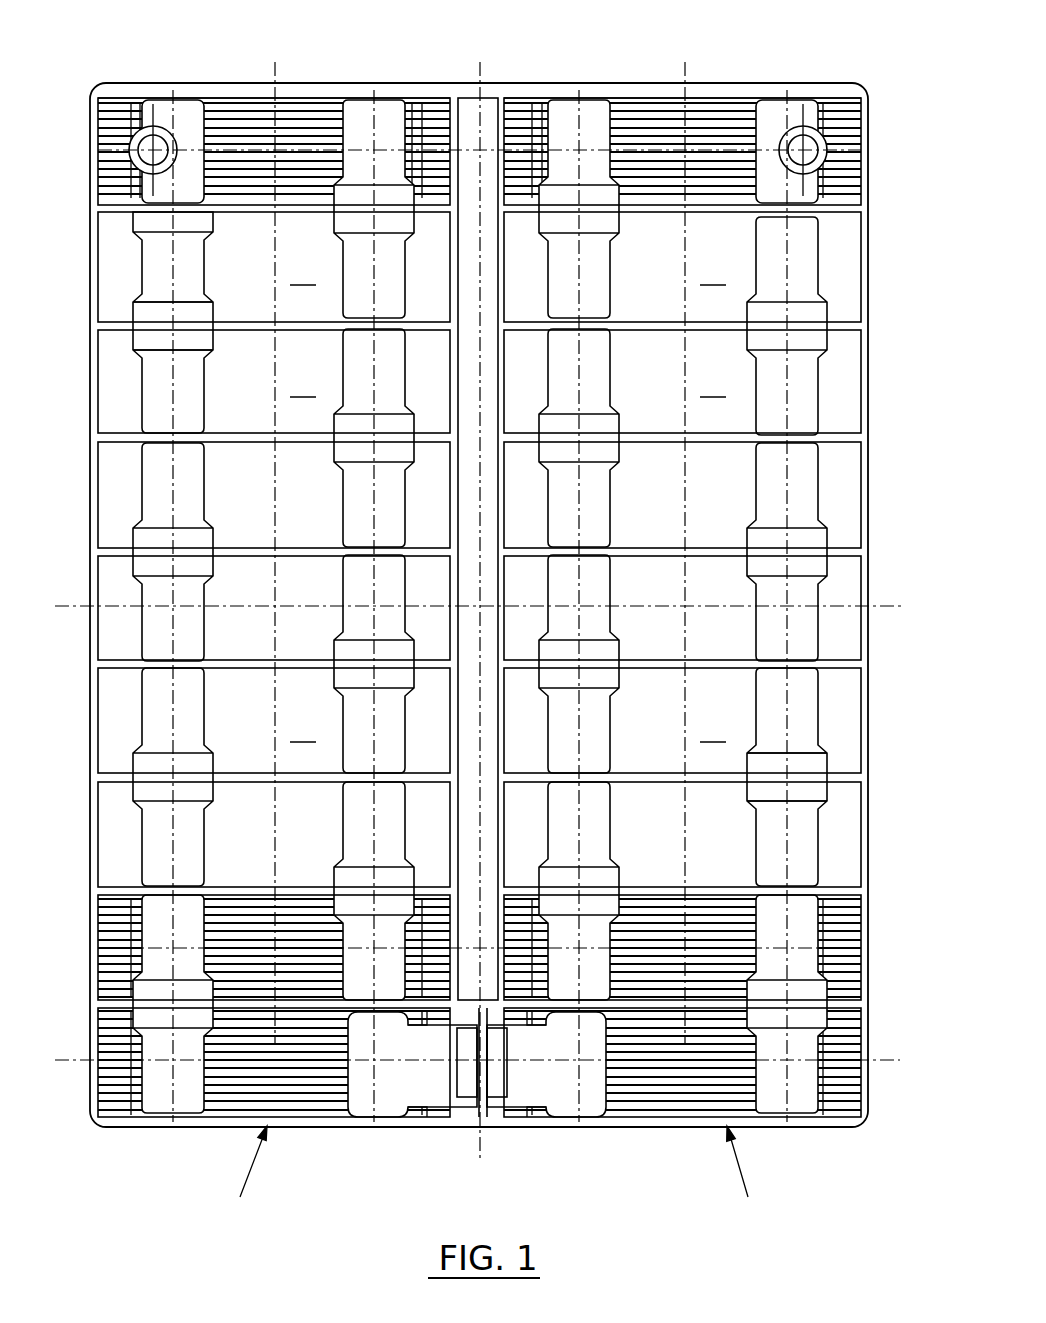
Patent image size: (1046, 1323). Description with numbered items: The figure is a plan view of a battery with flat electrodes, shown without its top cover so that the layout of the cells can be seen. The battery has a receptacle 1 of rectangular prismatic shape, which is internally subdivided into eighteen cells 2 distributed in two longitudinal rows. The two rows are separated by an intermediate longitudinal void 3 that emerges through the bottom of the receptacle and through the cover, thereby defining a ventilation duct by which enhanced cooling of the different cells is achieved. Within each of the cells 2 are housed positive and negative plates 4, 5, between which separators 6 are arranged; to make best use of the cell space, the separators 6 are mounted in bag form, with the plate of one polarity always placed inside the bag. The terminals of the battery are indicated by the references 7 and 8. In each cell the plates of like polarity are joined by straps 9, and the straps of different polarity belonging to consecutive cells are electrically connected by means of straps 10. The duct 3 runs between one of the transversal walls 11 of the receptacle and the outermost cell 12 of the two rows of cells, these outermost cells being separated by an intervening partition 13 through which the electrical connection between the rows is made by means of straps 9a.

The receptacle 1 is at (867, 505).
The cells 2 is at (479, 607).
The intermediate longitudinal void 3 is at (478, 150).
The positive plates 4 is at (847, 138).
The negative plates 5 is at (848, 188).
The separators 6 is at (827, 102).
The terminal 7 is at (797, 147).
The terminal 8 is at (155, 146).
The straps 9 is at (153, 267).
The straps 9a is at (405, 1100).
The straps 10 is at (152, 340).
The transversal wall 11 is at (248, 92).
The outermost cell 12 is at (491, 1171).
The intervening partition 13 is at (483, 1108).